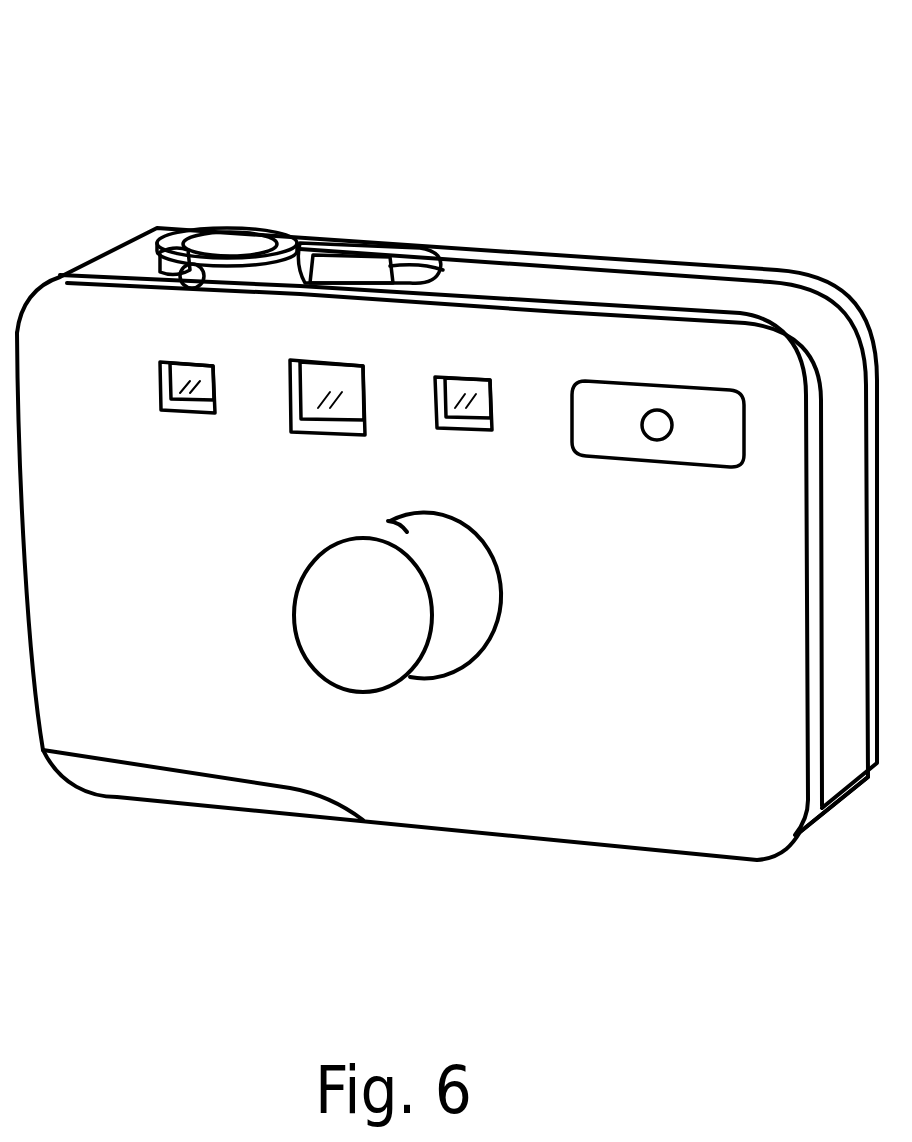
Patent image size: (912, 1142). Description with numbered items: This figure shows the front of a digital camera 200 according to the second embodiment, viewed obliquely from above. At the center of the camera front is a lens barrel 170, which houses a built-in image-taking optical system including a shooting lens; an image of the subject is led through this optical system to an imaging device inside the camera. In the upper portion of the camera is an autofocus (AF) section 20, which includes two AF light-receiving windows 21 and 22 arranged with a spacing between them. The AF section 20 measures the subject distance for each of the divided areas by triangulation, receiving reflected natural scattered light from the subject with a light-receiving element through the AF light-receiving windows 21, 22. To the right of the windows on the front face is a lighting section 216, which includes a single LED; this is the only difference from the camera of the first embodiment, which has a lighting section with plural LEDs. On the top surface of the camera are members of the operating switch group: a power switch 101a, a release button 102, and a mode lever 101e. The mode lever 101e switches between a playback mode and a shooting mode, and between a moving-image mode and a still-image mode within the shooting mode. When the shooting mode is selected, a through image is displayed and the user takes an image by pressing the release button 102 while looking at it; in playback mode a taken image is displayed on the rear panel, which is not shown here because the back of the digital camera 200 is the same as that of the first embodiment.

The digital camera 200 is at (500, 128).
The autofocus (AF) section 20 is at (452, 252).
The AF light-receiving window 21 is at (470, 377).
The AF light-receiving window 22 is at (210, 363).
The power switch 101a is at (353, 262).
The mode lever 101e is at (163, 262).
The release button 102 is at (227, 243).
The lens barrel 170 is at (390, 521).
The lighting section 216 is at (657, 440).